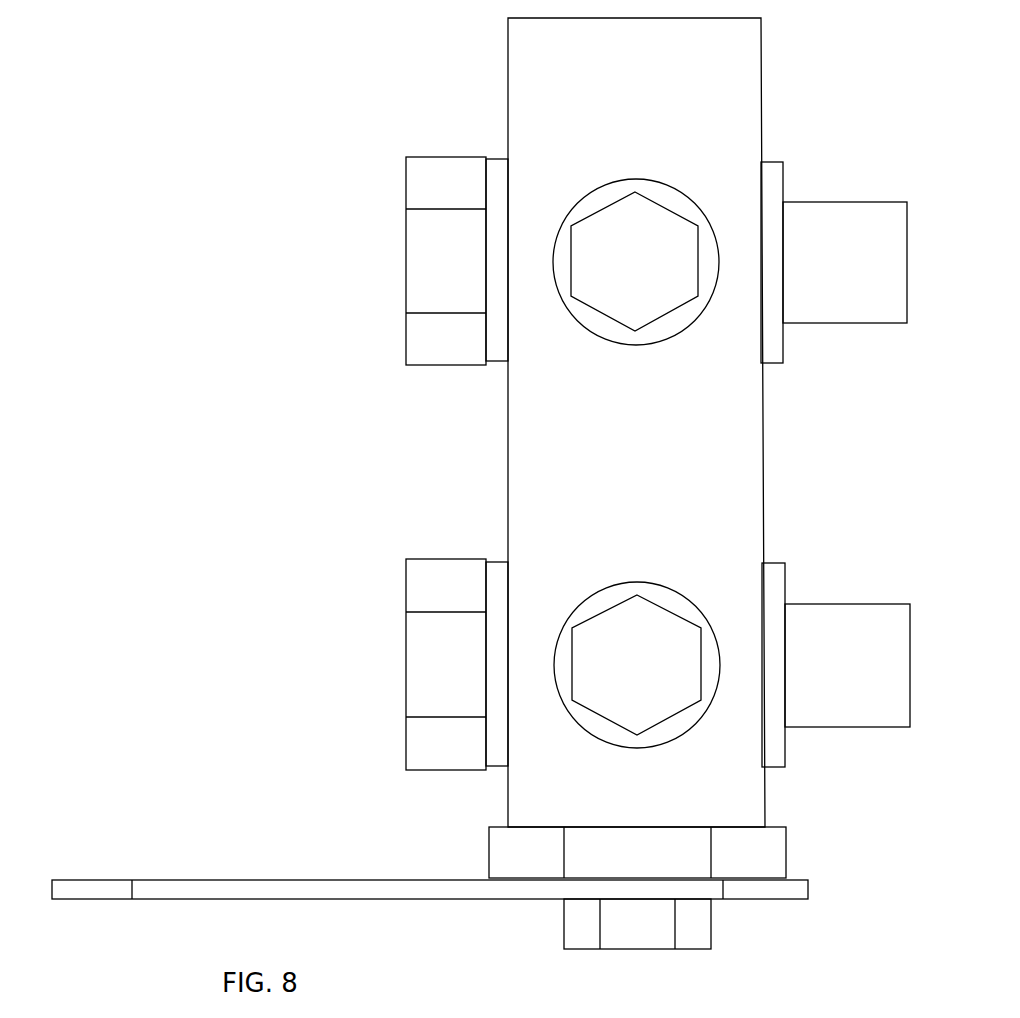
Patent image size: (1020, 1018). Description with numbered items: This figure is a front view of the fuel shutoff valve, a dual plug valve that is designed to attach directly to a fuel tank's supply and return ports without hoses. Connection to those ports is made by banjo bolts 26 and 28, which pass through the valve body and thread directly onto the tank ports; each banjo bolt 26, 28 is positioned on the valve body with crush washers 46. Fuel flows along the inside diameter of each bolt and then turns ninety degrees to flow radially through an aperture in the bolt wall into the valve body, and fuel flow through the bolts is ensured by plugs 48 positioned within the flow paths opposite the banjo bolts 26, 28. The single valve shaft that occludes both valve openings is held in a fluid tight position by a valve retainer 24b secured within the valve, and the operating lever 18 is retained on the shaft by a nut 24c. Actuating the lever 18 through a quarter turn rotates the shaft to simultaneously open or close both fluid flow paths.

The operating lever 18 is at (330, 887).
The valve retainer 24b is at (778, 852).
The nut 24c is at (703, 923).
The banjo bolt 26 is at (428, 575).
The banjo bolt 28 is at (432, 165).
The crush washer 46 is at (498, 173).
The plug 48 is at (658, 330).